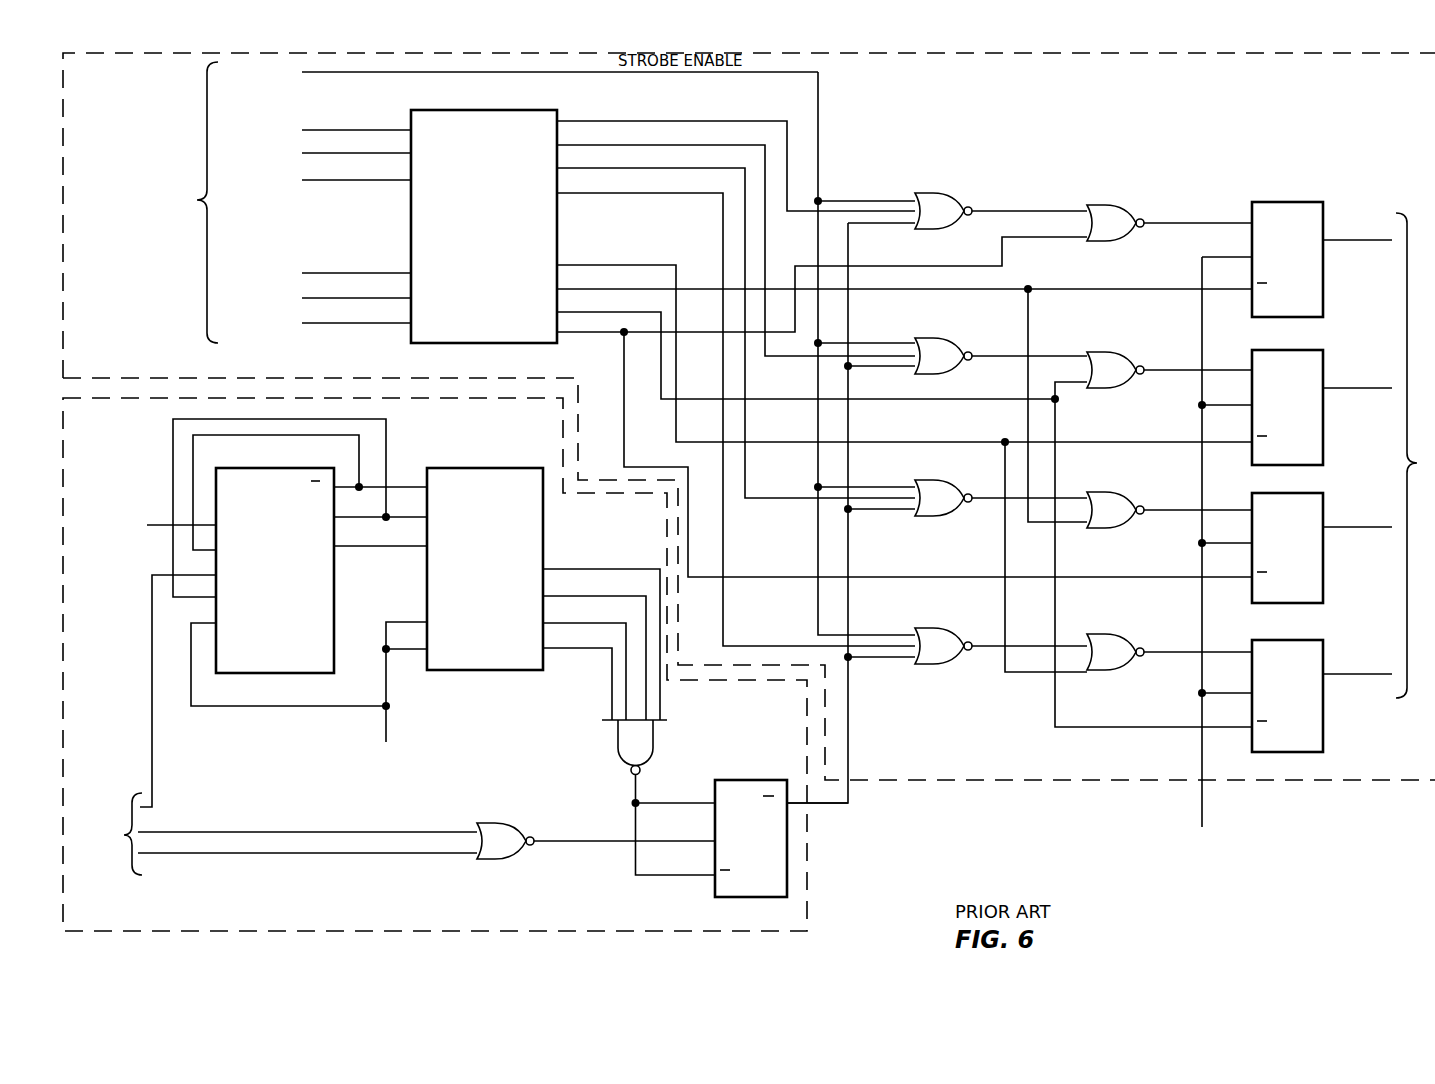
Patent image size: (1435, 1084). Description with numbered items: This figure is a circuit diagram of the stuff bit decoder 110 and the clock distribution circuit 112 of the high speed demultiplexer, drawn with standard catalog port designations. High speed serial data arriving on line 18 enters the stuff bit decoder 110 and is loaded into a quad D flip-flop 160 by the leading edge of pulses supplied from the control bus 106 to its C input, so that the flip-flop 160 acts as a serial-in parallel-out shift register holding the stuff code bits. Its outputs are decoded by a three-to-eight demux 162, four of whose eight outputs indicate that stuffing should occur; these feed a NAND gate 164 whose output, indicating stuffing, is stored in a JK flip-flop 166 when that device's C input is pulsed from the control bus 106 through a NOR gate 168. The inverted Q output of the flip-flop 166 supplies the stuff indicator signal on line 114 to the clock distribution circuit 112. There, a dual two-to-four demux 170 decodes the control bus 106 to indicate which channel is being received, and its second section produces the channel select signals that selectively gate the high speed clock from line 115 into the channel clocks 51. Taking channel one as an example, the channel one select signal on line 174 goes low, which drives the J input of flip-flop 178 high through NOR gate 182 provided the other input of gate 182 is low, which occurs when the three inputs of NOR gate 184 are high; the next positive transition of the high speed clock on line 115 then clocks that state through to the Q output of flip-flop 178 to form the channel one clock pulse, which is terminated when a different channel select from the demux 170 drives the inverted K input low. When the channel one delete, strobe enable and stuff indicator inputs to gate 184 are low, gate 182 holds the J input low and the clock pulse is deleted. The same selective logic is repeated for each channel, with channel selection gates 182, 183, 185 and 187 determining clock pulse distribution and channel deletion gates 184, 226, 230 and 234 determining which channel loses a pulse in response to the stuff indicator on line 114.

The line 18 is at (157, 525).
The channel clocks 51 is at (1379, 455).
The control bus 106 is at (440, 468).
The stuff bit decoder 110 is at (418, 933).
The clock distribution circuit 112 is at (1392, 783).
The line 114 is at (850, 800).
The line 115 is at (1202, 808).
The quad D flip-flop 160 is at (334, 601).
The 3 to 8 demux 162 is at (507, 670).
The NAND gate 164 is at (616, 752).
The JK flip-flop 166 is at (772, 897).
The NOR gate 168 is at (502, 823).
The dual 2 to 4 demux 170 is at (497, 343).
The line 174 is at (616, 343).
The flip-flop 178 is at (1287, 202).
The NOR gate 182 is at (1112, 207).
The channel selection gate 183 is at (1118, 352).
The NOR gate 184 is at (940, 195).
The channel selection gate 185 is at (1118, 492).
The channel selection gate 187 is at (1118, 635).
The channel deletion gate 226 is at (940, 339).
The channel deletion gate 230 is at (934, 481).
The channel deletion gate 234 is at (939, 629).